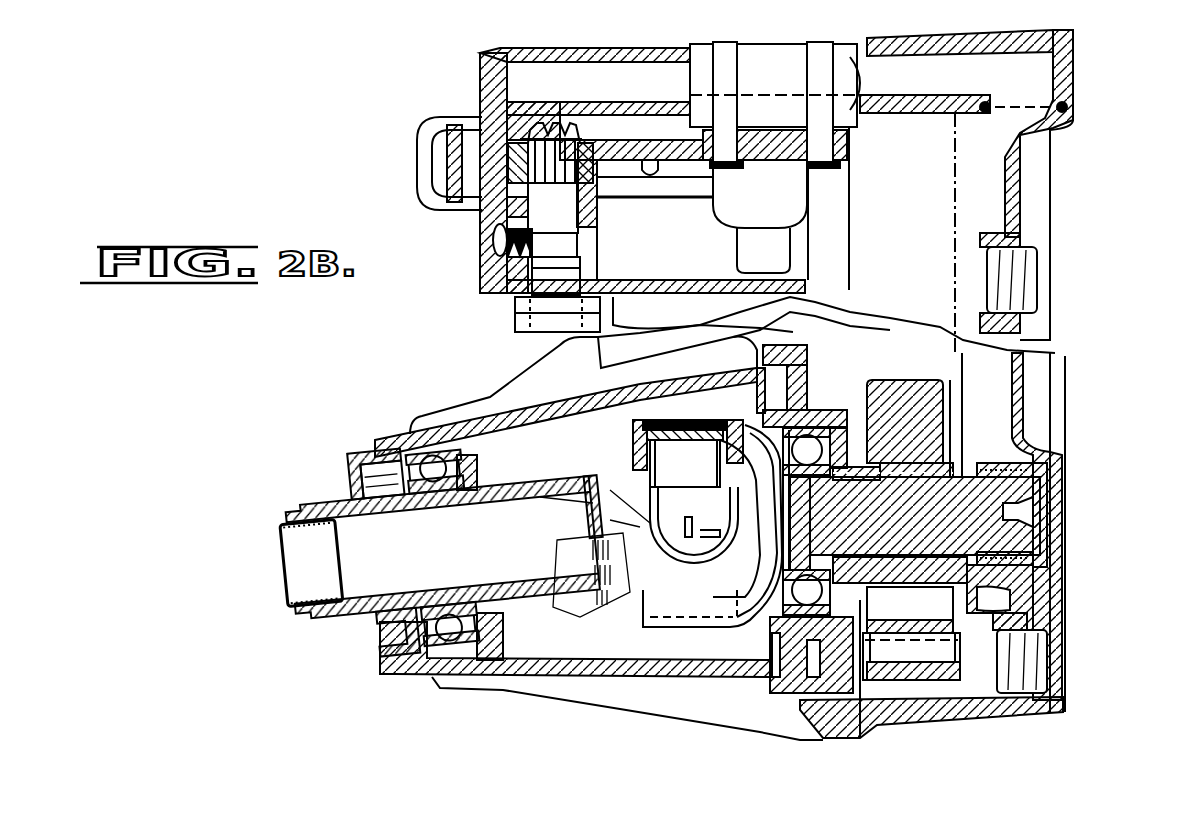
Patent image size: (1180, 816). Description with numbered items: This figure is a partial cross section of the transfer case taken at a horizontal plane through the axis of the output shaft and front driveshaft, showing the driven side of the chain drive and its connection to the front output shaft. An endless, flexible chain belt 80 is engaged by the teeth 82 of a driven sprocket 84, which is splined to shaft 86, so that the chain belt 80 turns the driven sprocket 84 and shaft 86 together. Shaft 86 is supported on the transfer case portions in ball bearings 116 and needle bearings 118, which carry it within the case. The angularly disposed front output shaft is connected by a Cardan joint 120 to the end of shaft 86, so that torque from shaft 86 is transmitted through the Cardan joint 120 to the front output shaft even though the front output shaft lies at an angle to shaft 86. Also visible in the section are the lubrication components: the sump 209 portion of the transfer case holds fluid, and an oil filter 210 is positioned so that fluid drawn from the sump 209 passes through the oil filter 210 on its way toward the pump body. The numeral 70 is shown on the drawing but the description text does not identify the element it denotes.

The input shaft 70 is at (350, 503).
The chain belt 80 is at (933, 678).
The teeth 82 is at (912, 352).
The driven sprocket 84 is at (950, 423).
The shaft 86 is at (1030, 485).
The ball bearings 116 is at (807, 605).
The needle bearings 118 is at (1038, 465).
The Cardan joint 120 is at (620, 450).
The sump 209 is at (660, 254).
The oil filter 210 is at (735, 249).